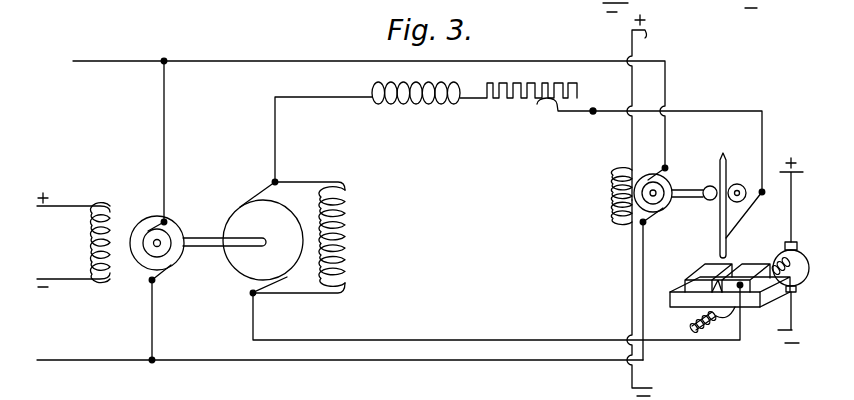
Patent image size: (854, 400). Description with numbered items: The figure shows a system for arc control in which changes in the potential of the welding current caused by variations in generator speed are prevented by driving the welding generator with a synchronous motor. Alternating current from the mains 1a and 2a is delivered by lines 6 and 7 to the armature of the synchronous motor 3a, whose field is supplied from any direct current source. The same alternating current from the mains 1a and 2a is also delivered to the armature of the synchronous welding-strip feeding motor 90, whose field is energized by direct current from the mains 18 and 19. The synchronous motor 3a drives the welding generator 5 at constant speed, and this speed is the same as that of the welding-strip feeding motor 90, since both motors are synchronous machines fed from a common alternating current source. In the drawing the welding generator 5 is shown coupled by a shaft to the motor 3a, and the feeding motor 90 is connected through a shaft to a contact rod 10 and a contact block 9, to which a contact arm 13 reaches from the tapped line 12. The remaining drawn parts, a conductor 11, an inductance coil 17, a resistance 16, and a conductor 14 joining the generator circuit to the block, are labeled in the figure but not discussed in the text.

The alternating current main 1a is at (123, 52).
The alternating current main 2a is at (128, 363).
The synchronous motor 3a is at (177, 226).
The welding generator 5 is at (306, 212).
The line 6 is at (296, 59).
The line 7 is at (297, 361).
The contact block 9 is at (750, 265).
The rod 10 is at (720, 221).
The conductor 11 is at (333, 101).
The conductor 12 is at (601, 117).
The contact arm 13 is at (762, 130).
The conductor 14 is at (471, 340).
The resistance 16 is at (521, 101).
The inductance coil 17 is at (412, 104).
The direct current main 18 is at (645, 38).
The direct current main 19 is at (652, 388).
The welding-strip feeding motor 90 is at (672, 185).